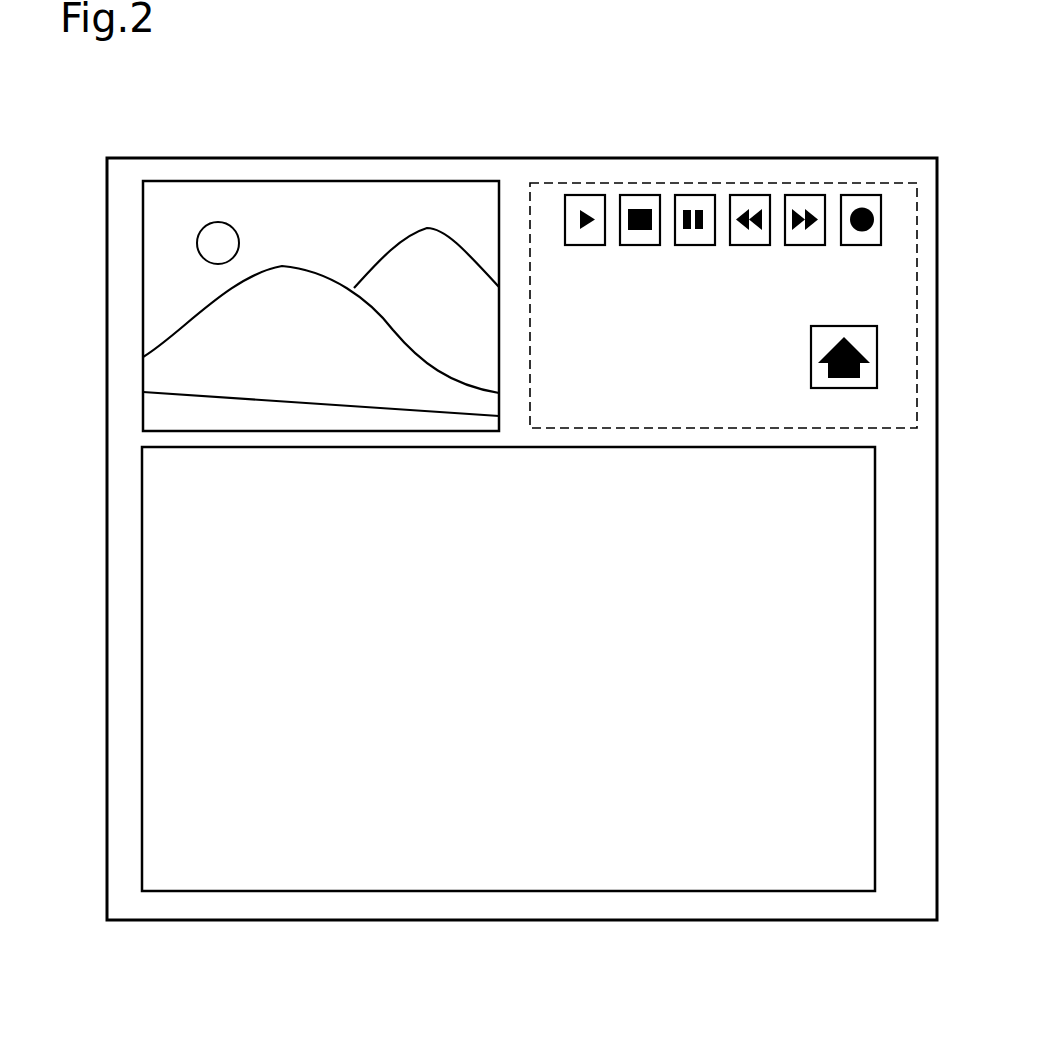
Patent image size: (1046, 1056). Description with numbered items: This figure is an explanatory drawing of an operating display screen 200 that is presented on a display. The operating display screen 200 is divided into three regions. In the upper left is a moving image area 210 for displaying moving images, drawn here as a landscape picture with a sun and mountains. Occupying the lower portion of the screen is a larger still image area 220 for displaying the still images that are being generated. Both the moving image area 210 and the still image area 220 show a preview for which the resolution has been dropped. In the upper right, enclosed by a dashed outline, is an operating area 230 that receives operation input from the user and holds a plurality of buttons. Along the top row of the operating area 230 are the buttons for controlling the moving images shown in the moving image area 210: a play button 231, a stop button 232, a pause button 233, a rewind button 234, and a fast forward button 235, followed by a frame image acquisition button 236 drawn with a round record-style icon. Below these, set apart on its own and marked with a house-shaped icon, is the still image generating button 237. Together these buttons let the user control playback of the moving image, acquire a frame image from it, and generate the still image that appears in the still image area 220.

The operating display screen 200 is at (567, 120).
The moving image area 210 is at (317, 198).
The still image area 220 is at (672, 842).
The operating area 230 is at (730, 183).
The play button 231 is at (573, 245).
The stop button 232 is at (648, 245).
The pause button 233 is at (703, 245).
The rewind button 234 is at (759, 245).
The fast forward button 235 is at (815, 245).
The frame image acquisition button 236 is at (870, 245).
The still image generating button 237 is at (811, 342).